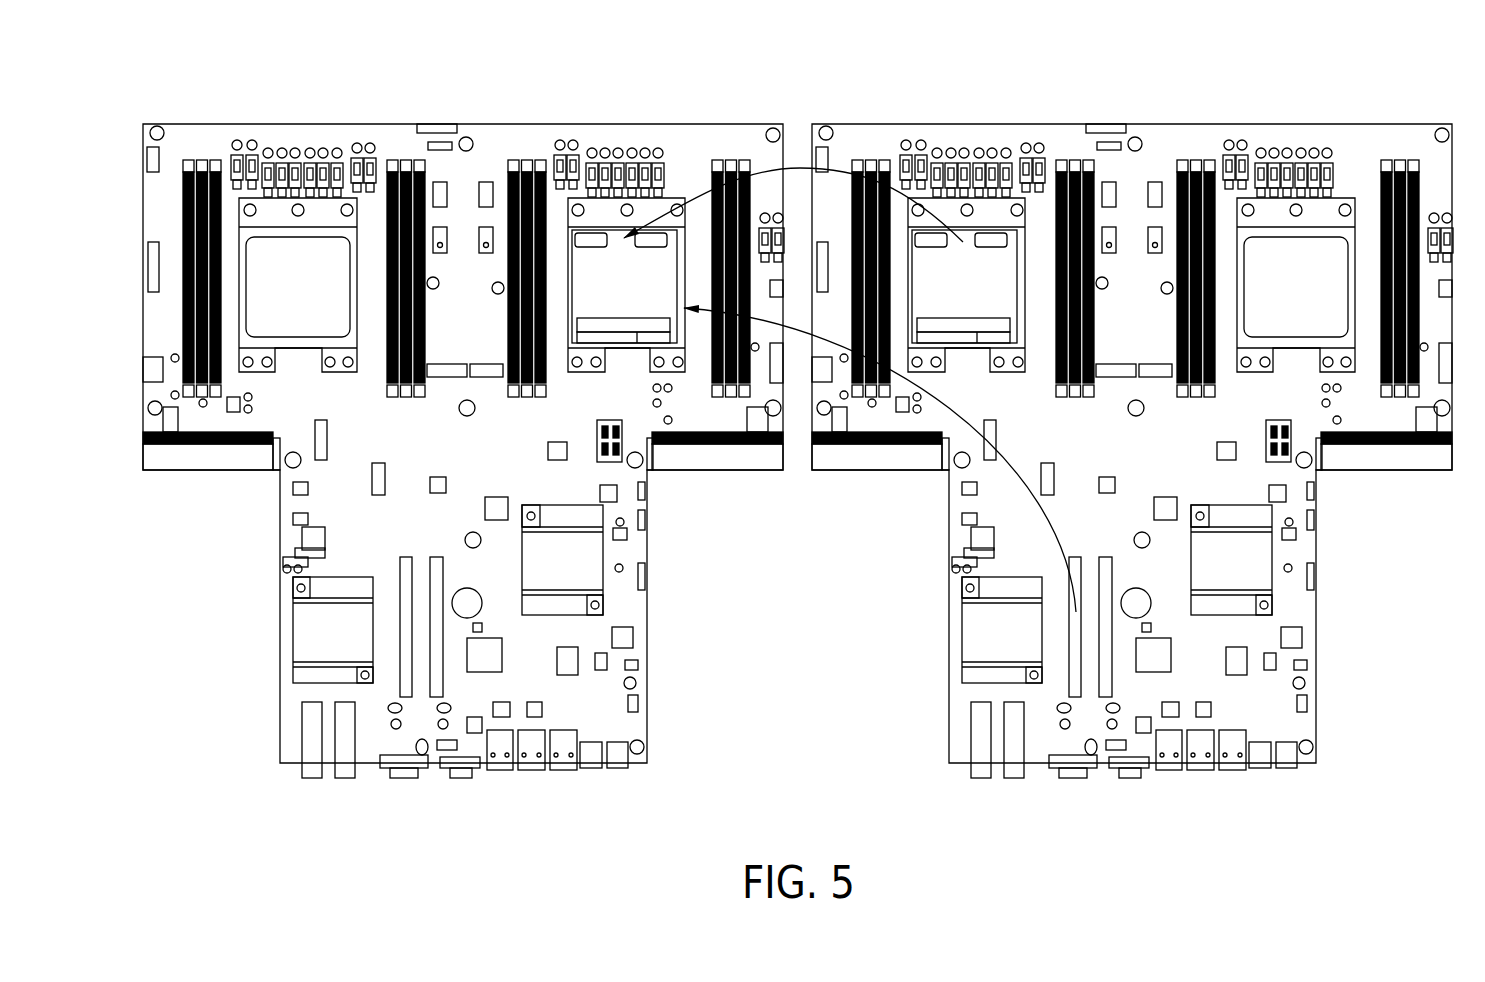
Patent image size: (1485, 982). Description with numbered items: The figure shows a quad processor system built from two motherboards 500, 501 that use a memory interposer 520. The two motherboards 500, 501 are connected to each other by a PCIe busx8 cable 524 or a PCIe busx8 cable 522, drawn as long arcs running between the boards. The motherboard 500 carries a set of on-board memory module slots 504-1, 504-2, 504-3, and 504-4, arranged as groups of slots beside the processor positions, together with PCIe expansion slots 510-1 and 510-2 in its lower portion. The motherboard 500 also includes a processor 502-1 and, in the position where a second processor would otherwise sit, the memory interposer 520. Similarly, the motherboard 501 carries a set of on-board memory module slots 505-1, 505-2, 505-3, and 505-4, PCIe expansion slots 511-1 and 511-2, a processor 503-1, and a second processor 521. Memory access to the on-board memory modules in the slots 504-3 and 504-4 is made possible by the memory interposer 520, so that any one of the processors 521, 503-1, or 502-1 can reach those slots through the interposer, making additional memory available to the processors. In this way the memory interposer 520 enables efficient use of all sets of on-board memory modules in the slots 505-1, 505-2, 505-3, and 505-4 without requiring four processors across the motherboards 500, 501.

The motherboard 500 is at (262, 767).
The motherboard 501 is at (866, 603).
The processor 502-1 is at (292, 322).
The processor 503-1 is at (1294, 322).
The on-board memory module slot 504-1 is at (192, 163).
The on-board memory module slot 504-2 is at (387, 358).
The on-board memory module slot 504-3 is at (520, 163).
The on-board memory module slot 504-4 is at (727, 163).
The on-board memory module slot 505-1 is at (872, 163).
The on-board memory module slot 505-2 is at (1067, 163).
The on-board memory module slot 505-3 is at (1193, 163).
The on-board memory module slot 505-4 is at (1398, 163).
The PCIe expansion slot 510-1 is at (407, 642).
The PCIe expansion slot 510-2 is at (437, 670).
The PCIe expansion slot 511-1 is at (1076, 642).
The PCIe expansion slot 511-2 is at (1106, 670).
The memory interposer 520 is at (625, 310).
The second processor 521 is at (958, 310).
The PCIe busx8 cable 522 is at (802, 328).
The PCIe busx8 cable 524 is at (800, 168).